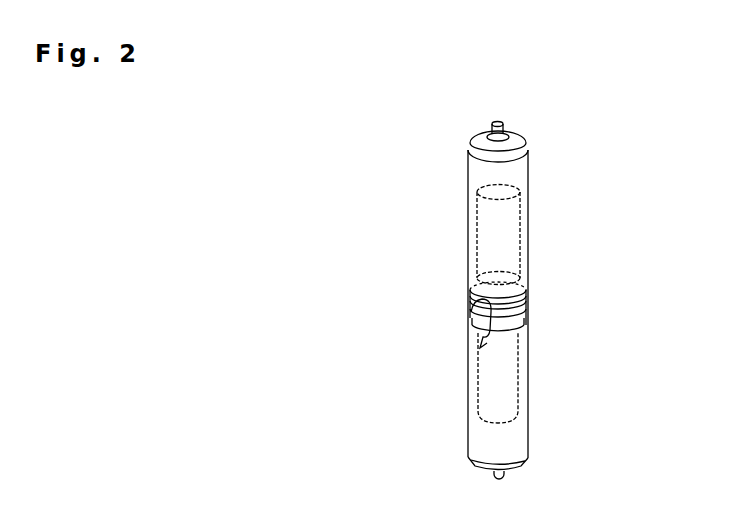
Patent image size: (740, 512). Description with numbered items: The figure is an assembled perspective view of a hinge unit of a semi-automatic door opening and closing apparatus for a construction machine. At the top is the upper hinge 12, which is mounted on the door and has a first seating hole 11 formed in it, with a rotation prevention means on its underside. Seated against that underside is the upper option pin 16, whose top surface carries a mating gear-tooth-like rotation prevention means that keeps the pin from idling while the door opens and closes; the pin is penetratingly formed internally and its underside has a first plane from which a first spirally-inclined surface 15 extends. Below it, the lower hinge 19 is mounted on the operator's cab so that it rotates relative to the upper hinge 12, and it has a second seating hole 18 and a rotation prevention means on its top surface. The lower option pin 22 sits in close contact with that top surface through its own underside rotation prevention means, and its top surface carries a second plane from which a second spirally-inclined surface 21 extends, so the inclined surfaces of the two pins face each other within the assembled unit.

The first seating hole 11 is at (521, 223).
The upper hinge 12 is at (528, 173).
The first spirally-inclined surface 15 is at (470, 302).
The upper option pin 16 is at (524, 300).
The second seating hole 18 is at (520, 373).
The lower hinge 19 is at (525, 437).
The second spirally-inclined surface 21 is at (480, 349).
The lower option pin 22 is at (524, 320).